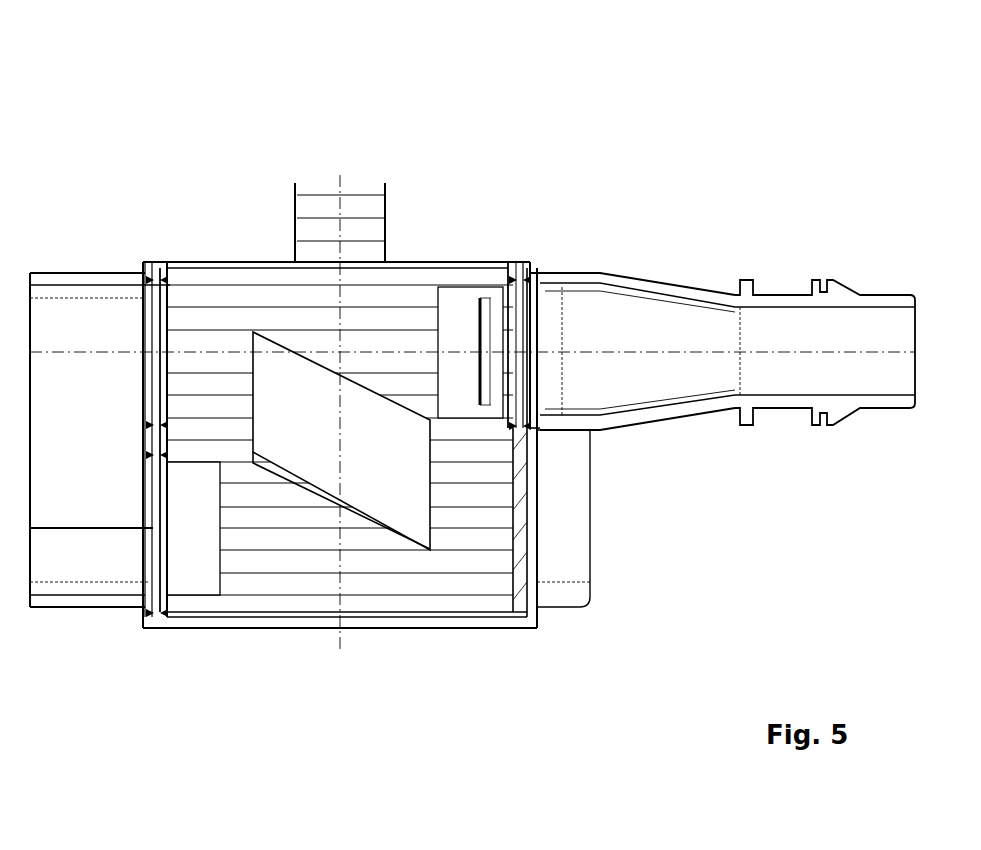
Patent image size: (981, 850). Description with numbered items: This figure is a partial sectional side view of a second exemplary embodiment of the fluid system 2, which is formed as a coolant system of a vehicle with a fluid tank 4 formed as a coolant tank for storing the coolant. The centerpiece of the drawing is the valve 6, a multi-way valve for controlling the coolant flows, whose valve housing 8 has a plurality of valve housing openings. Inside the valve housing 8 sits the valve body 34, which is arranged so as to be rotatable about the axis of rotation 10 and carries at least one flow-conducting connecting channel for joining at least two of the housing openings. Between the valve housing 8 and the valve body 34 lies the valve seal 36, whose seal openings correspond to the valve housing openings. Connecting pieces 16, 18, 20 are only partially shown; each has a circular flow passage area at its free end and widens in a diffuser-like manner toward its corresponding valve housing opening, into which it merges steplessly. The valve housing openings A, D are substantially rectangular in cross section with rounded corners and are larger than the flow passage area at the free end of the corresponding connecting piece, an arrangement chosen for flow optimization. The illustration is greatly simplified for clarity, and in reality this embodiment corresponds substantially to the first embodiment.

The fluid system 2 is at (847, 92).
The fluid tank 4 is at (774, 112).
The valve 6 is at (409, 108).
The valve housing 8 is at (220, 622).
The axis of rotation 10 is at (338, 193).
The connecting piece 16 is at (655, 290).
The connecting piece 18 is at (572, 593).
The connecting piece 20 is at (72, 270).
The valve body 34 is at (210, 266).
The valve seal 36 is at (533, 492).
The valve housing opening A is at (136, 310).
The valve housing opening D is at (543, 310).